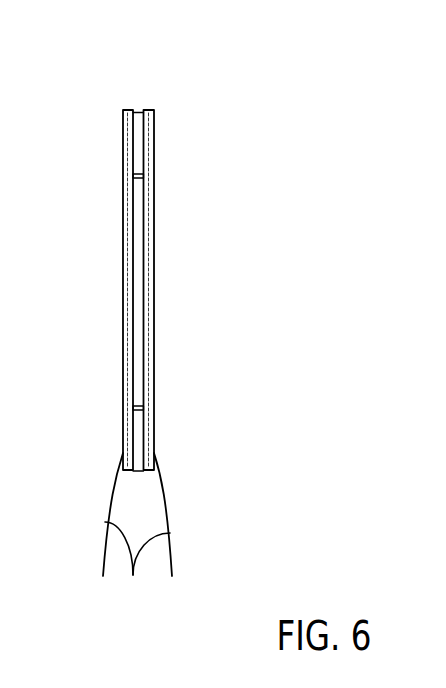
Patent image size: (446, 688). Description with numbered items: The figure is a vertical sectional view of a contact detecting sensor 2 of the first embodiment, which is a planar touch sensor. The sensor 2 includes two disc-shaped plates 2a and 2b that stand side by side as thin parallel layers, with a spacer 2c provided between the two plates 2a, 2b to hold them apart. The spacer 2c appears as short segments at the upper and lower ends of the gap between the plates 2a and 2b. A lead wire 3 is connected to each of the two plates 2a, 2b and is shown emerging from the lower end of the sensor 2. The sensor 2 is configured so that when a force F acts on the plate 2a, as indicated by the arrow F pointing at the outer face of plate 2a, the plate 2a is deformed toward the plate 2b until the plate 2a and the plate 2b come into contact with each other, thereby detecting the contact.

The contact detecting sensor 2 is at (143, 241).
The plate 2a is at (131, 200).
The plate 2b is at (148, 186).
The spacer 2c is at (138, 140).
The lead wire 3 is at (137, 529).
The force F is at (107, 293).